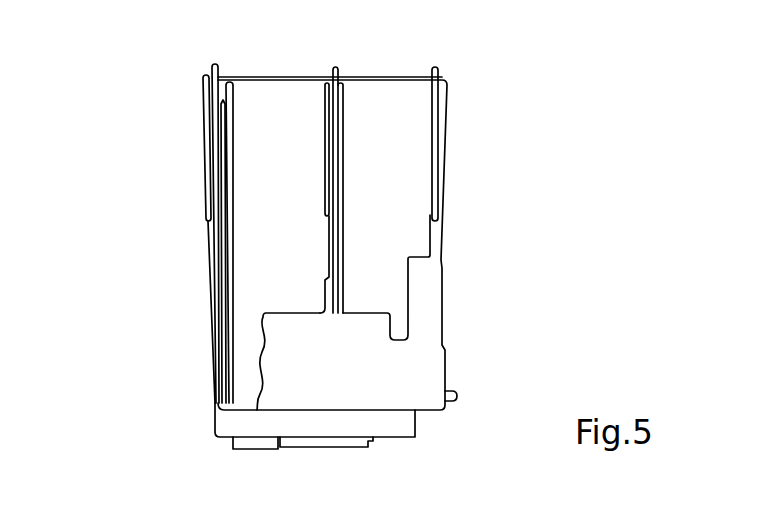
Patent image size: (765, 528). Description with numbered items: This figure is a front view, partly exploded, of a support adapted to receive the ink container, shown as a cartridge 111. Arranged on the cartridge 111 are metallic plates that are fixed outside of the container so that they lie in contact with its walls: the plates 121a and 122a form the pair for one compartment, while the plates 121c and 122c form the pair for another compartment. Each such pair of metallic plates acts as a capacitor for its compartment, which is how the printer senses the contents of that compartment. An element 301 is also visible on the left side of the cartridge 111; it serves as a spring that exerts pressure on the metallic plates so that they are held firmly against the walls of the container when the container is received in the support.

The cartridge 111 is at (530, 122).
The metallic plate 122a is at (223, 104).
The element serving as a spring 301 is at (220, 127).
The metallic plate 121a is at (230, 283).
The metallic plate 122c is at (328, 221).
The metallic plate 121c is at (318, 278).